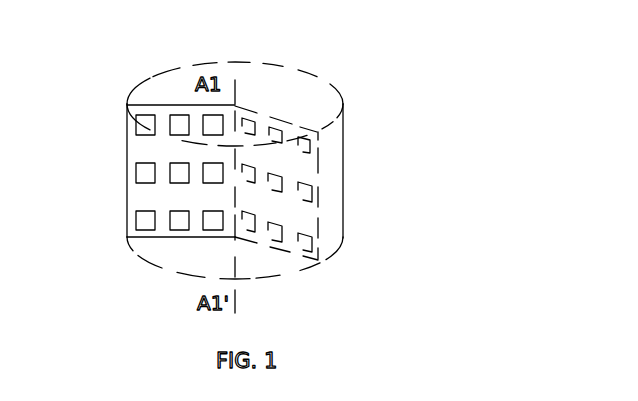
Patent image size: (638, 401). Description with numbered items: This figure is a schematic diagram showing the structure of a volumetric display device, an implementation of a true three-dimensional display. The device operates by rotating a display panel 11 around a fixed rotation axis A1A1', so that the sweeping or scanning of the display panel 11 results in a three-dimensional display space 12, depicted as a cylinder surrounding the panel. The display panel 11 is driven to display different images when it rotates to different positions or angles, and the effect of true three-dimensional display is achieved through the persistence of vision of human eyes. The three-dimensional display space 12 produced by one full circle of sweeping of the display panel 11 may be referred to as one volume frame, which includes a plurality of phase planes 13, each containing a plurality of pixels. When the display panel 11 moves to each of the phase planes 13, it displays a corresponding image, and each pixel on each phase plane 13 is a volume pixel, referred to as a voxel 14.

The display panel 11 is at (249, 137).
The three-dimensional display space 12 is at (303, 97).
The phase plane 13 is at (270, 117).
The voxel 14 is at (302, 185).